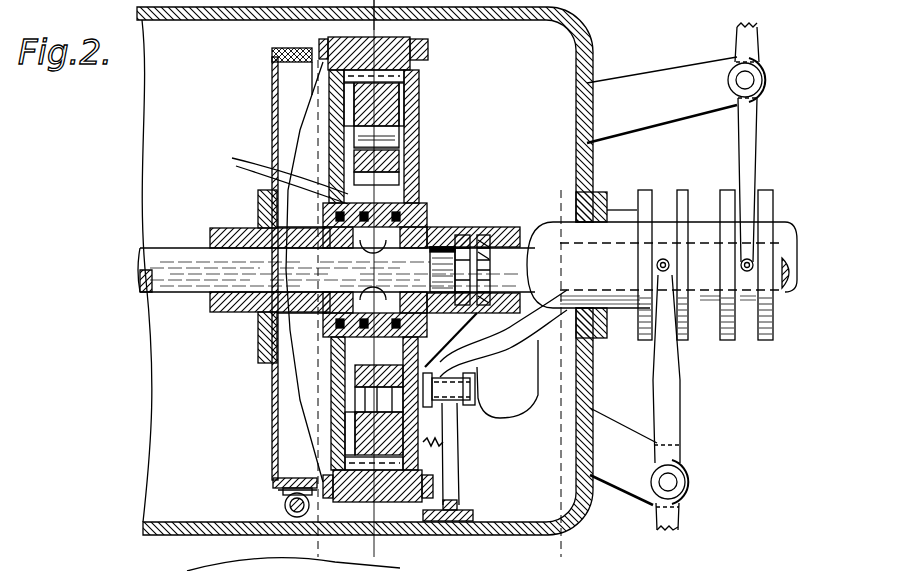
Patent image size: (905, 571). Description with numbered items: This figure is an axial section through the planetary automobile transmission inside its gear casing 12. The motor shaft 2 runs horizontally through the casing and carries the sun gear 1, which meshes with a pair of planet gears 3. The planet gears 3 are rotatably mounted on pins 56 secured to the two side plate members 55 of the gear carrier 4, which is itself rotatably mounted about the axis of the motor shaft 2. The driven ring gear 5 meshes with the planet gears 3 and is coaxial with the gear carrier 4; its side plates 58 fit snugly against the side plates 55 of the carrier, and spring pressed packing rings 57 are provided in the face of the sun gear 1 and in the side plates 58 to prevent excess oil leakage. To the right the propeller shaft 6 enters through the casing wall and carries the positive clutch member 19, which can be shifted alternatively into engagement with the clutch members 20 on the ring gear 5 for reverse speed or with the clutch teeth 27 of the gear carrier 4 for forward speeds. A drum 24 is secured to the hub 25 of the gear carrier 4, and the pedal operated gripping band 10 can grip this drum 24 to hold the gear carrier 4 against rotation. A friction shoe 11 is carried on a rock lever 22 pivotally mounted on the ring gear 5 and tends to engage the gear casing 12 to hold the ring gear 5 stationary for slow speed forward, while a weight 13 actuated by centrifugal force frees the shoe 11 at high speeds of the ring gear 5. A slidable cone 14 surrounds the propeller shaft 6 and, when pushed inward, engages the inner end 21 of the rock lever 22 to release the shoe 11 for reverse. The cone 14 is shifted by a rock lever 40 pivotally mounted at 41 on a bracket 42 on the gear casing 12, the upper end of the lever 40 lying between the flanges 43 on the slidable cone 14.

The sun gear 1 is at (414, 214).
The motor shaft 2 is at (194, 282).
The planet gears 3 is at (404, 112).
The gear carrier 4 is at (382, 168).
The driven ring gear 5 is at (428, 46).
The propeller shaft 6 is at (540, 262).
The gripping band 10 is at (285, 492).
The friction shoe 11 is at (466, 512).
The gear casing 12 is at (534, 520).
The weight 13 is at (524, 391).
The slidable cone 14 is at (609, 200).
The positive clutch member 19 is at (486, 233).
The clutch members 20 is at (496, 312).
The inner end 21 is at (598, 338).
The rock lever 22 is at (459, 452).
The drum 24 is at (292, 478).
The hub 25 is at (258, 316).
The clutch teeth 27 is at (461, 233).
The rock lever 40 is at (684, 523).
The pivot 41 is at (673, 485).
The bracket 42 is at (636, 447).
The flanges 43 is at (679, 191).
The side plate members 55 is at (330, 121).
The pins 56 is at (392, 150).
The packing rings 57 is at (275, 174).
The side plates 58 is at (333, 87).